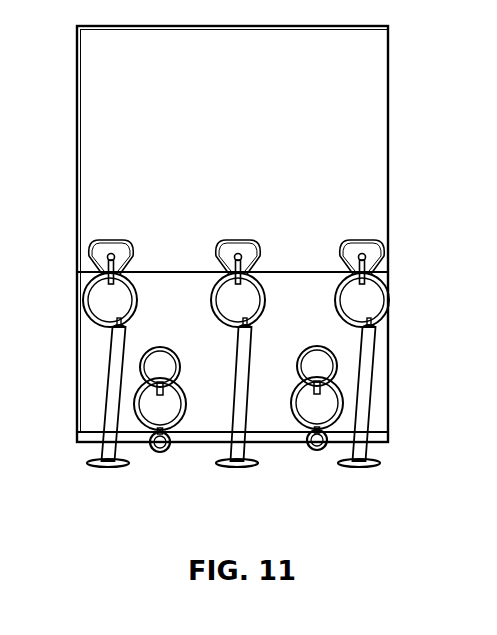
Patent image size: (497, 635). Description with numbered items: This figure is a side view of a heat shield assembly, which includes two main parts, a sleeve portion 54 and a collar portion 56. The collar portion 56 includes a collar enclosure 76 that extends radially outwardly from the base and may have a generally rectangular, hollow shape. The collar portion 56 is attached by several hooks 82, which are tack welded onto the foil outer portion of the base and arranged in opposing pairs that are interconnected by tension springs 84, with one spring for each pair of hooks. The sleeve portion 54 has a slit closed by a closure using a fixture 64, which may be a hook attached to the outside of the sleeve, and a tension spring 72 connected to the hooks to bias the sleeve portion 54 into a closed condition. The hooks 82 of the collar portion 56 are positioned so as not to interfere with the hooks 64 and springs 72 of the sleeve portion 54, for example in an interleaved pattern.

The collar enclosure 76 is at (388, 63).
The collar portion 56 is at (389, 156).
The sleeve portion 54 is at (390, 324).
The hooks 82 is at (119, 240).
The tension springs 84 is at (113, 364).
The fixture 64 is at (170, 363).
The tension spring 72 is at (160, 453).